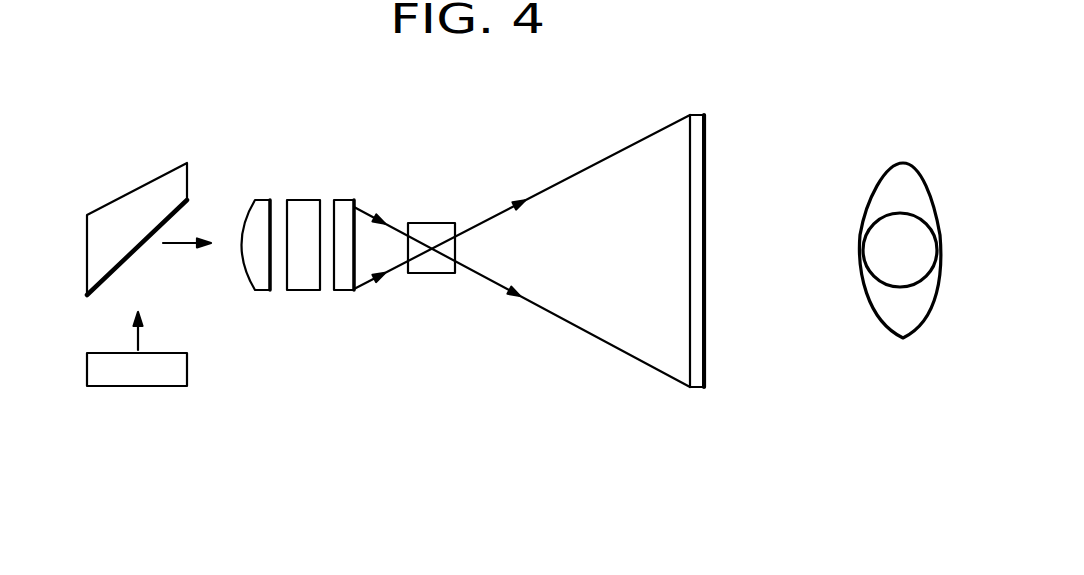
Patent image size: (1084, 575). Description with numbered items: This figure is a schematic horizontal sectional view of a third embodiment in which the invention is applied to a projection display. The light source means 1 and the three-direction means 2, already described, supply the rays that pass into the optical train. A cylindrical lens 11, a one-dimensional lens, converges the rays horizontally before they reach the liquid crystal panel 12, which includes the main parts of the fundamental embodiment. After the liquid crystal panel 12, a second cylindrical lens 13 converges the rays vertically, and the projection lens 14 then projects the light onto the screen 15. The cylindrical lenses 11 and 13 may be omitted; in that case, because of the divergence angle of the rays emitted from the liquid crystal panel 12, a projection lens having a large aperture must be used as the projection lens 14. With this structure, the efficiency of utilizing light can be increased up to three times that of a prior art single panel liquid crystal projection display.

The light source means 1 is at (150, 388).
The three-direction means 2 is at (135, 190).
The cylindrical lens 11 is at (258, 200).
The liquid crystal panel 12 is at (304, 292).
The cylindrical lens 13 is at (345, 200).
The projection lens 14 is at (428, 223).
The screen 15 is at (706, 365).